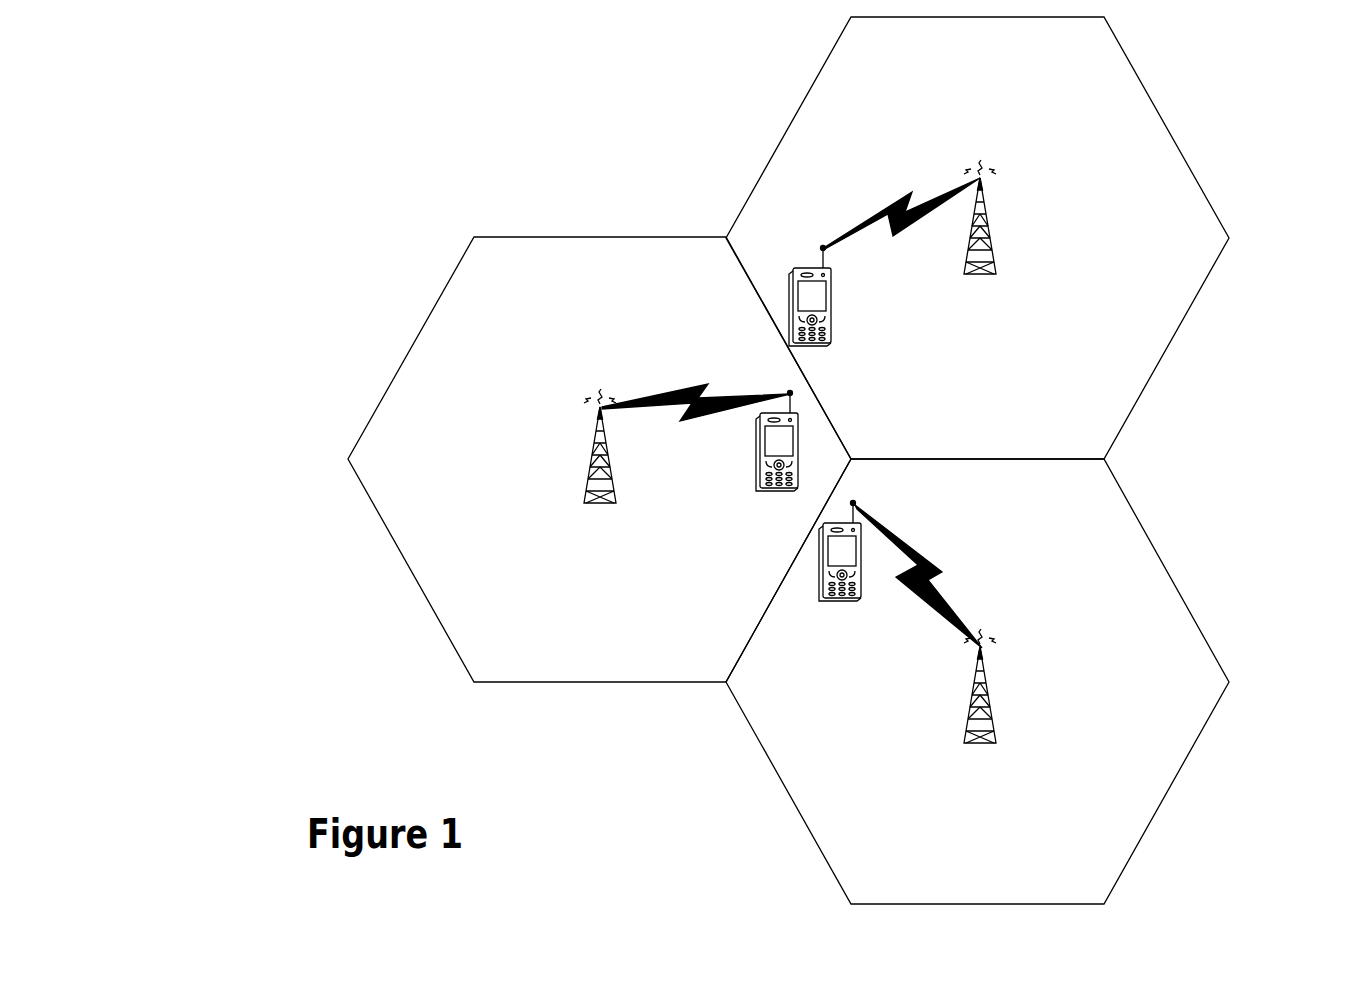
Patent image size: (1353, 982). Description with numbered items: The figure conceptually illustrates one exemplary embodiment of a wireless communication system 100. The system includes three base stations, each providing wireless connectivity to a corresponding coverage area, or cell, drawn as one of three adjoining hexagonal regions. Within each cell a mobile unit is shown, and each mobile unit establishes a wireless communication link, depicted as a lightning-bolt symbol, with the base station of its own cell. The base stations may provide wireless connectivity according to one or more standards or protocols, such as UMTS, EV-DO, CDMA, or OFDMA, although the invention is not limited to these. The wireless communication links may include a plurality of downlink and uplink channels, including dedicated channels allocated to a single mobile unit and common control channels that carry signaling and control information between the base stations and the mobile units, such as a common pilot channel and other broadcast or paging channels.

The wireless communication system 100 is at (283, 145).